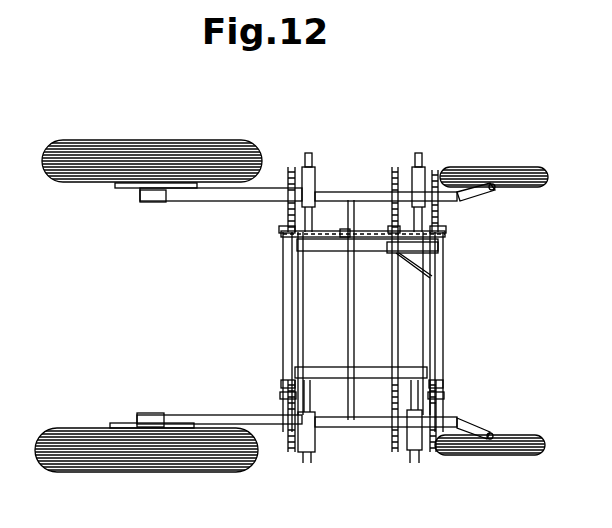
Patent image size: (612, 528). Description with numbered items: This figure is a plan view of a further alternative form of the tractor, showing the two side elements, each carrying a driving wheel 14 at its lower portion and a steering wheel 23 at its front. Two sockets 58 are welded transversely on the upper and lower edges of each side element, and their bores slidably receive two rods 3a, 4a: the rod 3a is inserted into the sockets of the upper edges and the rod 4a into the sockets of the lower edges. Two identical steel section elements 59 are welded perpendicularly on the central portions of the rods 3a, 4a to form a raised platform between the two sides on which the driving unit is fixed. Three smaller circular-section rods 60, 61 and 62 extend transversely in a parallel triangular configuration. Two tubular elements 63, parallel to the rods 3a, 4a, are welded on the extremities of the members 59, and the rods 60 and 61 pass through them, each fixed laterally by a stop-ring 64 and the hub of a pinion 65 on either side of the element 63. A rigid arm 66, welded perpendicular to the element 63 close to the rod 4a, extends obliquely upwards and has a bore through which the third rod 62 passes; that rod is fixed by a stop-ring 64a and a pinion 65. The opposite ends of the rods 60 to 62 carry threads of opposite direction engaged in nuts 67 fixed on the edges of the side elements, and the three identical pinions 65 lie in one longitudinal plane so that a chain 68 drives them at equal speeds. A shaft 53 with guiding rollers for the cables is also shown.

The driving wheel 14 is at (83, 145).
The steering wheel 23 is at (513, 168).
The rod 3a is at (308, 153).
The rod 4a is at (420, 153).
The socket 58 is at (370, 298).
The nut 67 is at (287, 190).
The tubular element 63 is at (284, 300).
The pinion 65 is at (285, 228).
The chain 68 is at (343, 236).
The steel section element 59 is at (330, 251).
The rigid arm 66 is at (440, 251).
The stop-ring 64a is at (392, 256).
The shaft 53 is at (349, 326).
The rod 62 is at (391, 404).
The stop-ring 64 is at (284, 380).
The rod 60 is at (282, 395).
The rod 61 is at (443, 402).